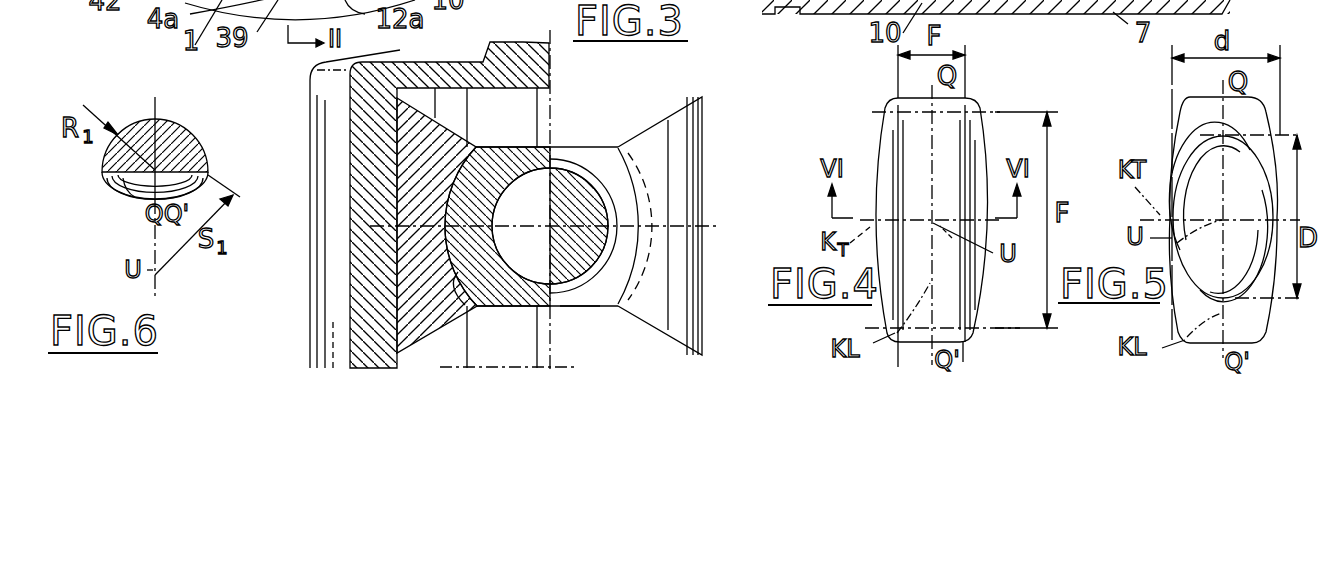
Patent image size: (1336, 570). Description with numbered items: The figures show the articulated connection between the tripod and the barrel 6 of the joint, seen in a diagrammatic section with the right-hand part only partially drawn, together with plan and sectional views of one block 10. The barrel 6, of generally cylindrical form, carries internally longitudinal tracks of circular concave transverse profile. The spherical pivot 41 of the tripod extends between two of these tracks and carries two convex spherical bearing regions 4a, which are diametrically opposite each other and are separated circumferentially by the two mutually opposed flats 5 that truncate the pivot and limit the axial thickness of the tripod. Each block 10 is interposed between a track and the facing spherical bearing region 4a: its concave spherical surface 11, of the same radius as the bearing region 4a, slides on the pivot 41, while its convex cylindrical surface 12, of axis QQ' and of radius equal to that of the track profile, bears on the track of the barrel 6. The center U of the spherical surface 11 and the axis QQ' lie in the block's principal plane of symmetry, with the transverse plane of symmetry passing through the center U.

In FIG. 3, the block 10 is at (648, 150).
In FIG. 4, the block 10 is at (990, 286).
In FIG. 5, the block 10 is at (1255, 121).
In FIG. 6, the block 10 is at (185, 133).
In FIG. 3, the concave spherical surface 11 is at (464, 190).
In FIG. 5, the concave spherical surface 11 is at (1250, 192).
In FIG. 6, the concave spherical surface 11 is at (123, 193).
In FIG. 3, the convex cylindrical surface 12 is at (686, 177).
In FIG. 4, the convex cylindrical surface 12 is at (957, 150).
In FIG. 6, the convex cylindrical surface 12 is at (207, 150).
In FIG. 3, the flats 5 is at (568, 145).
In FIG. 3, the barrel 6 is at (347, 210).
In FIG. 3, the convex spherical bearing region 4a is at (470, 311).
In FIG. 3, the spherical pivot 41 is at (565, 316).